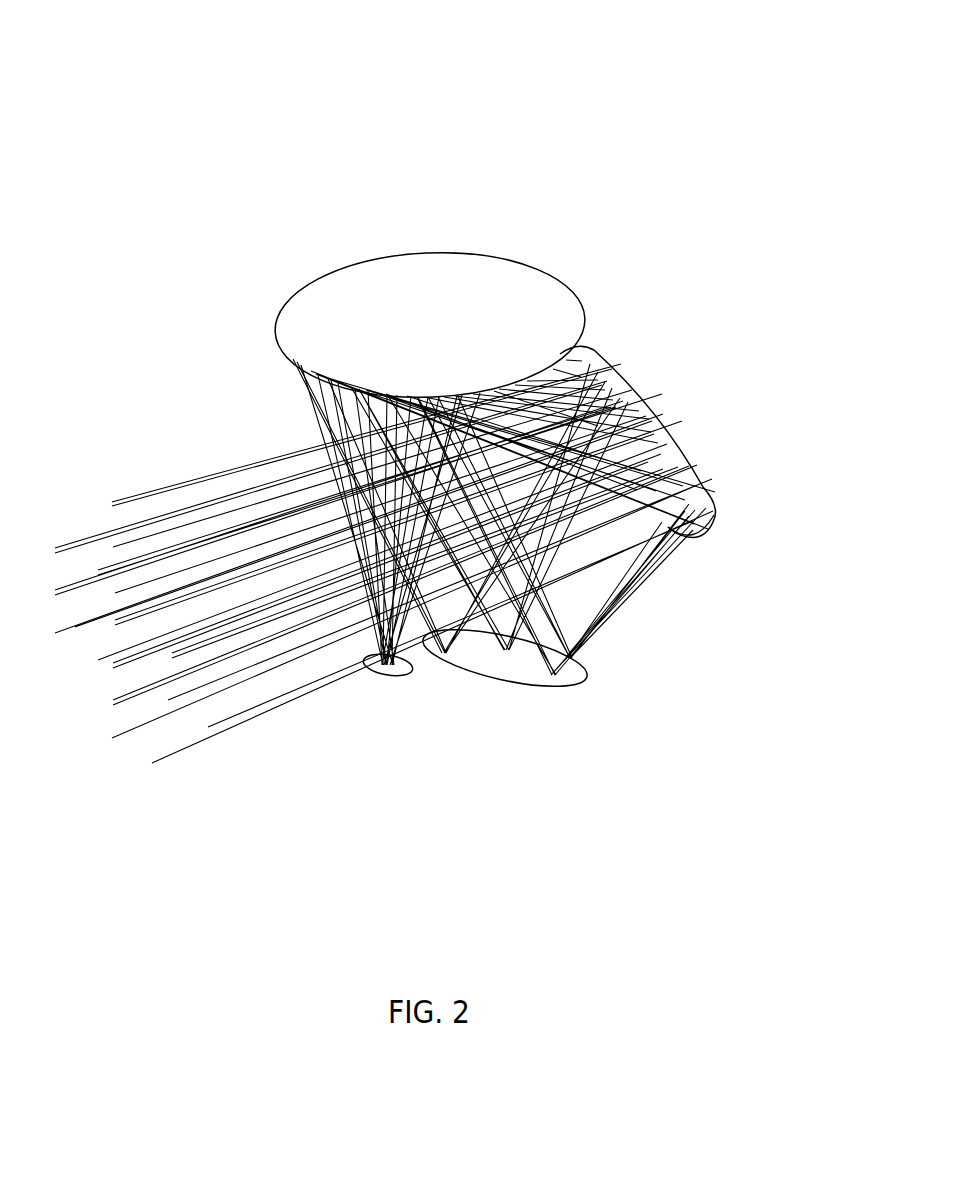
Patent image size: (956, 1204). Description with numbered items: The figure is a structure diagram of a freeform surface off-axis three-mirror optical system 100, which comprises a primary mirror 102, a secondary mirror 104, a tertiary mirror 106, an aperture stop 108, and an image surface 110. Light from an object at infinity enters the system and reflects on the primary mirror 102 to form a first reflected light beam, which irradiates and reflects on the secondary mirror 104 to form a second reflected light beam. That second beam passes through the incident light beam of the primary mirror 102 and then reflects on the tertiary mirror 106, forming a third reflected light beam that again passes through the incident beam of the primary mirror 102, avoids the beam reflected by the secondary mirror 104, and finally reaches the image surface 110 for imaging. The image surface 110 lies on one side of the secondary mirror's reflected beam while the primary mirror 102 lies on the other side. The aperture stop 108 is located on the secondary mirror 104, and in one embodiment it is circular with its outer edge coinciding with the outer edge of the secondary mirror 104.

The freeform surface off-axis three-mirror optical system 100 is at (478, 168).
The primary mirror 102 is at (640, 413).
The secondary mirror 104 is at (528, 680).
The tertiary mirror 106 is at (403, 325).
The aperture stop 108 is at (485, 652).
The image surface 110 is at (373, 673).